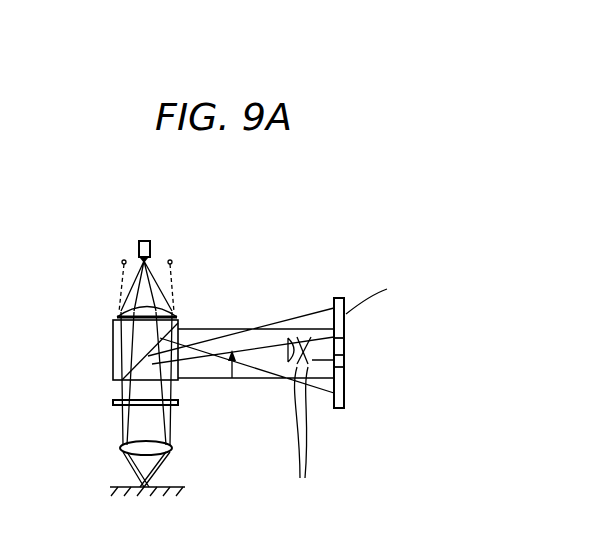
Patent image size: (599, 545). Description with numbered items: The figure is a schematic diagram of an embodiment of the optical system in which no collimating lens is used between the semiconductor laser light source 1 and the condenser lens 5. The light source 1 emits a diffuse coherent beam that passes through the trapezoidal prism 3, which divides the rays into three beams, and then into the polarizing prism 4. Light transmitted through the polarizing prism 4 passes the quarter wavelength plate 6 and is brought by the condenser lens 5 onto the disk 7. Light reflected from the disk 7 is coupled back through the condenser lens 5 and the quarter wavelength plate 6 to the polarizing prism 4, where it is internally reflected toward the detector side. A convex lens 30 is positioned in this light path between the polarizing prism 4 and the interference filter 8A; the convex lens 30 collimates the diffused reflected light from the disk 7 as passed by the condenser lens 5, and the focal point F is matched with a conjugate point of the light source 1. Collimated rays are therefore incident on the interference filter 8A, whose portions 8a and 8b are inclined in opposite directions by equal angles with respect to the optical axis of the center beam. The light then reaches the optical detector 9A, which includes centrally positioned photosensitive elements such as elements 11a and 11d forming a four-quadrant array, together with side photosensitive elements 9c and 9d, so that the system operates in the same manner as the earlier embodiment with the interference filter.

The semiconductor laser light source 1 is at (139, 245).
The trapezoidal prism 3 is at (120, 310).
The polarizing prism 4 is at (113, 355).
The condenser lens 5 is at (128, 452).
The quarter wavelength plate 6 is at (113, 403).
The disk 7 is at (170, 487).
The interference filter 8A is at (338, 361).
The filter portion 8a is at (310, 343).
The filter portion 8b is at (300, 343).
The optical detector 9A is at (408, 334).
The side photosensitive element 9c is at (346, 306).
The side photosensitive element 9d is at (342, 410).
The photosensitive element 11a is at (346, 343).
The photosensitive element 11d is at (346, 361).
The convex lens 30 is at (285, 349).
The focal point F is at (232, 378).